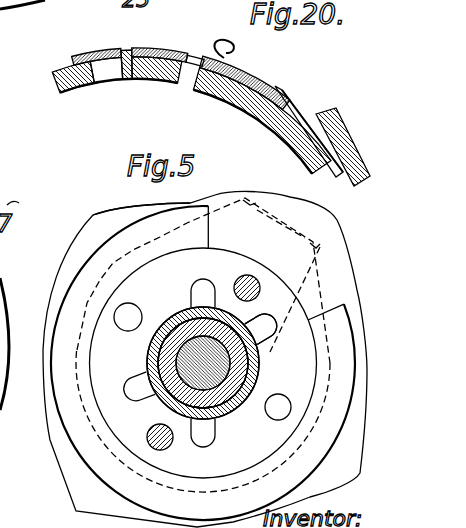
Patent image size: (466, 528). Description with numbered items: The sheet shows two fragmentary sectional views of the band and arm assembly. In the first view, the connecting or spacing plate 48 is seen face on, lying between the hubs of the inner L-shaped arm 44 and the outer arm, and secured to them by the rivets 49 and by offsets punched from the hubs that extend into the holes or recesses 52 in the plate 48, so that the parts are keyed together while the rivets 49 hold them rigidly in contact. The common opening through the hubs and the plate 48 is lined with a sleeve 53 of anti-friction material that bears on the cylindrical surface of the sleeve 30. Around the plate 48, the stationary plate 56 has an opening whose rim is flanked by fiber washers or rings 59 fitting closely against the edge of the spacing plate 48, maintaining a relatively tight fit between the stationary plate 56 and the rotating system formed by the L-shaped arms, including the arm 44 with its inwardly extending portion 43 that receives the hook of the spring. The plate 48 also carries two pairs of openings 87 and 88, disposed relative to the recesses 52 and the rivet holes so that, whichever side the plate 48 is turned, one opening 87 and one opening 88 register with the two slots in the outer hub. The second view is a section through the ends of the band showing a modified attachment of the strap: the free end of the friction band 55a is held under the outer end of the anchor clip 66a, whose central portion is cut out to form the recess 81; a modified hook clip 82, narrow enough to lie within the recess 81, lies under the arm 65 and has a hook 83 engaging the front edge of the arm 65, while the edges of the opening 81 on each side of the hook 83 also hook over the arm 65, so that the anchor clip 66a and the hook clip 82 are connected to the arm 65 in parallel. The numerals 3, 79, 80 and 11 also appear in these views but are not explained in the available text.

In FIG. 20, the drum 3 is at (333, 121).
In FIG. 20, the friction band 55a is at (80, 91).
In FIG. 20, the slot 79 is at (108, 72).
In FIG. 20, the pin 80 is at (127, 70).
In FIG. 20, the anchor clip 66a is at (162, 50).
In FIG. 20, the recess 81 is at (198, 60).
In FIG. 20, the hook 83 is at (229, 48).
In FIG. 20, the arm 65 is at (263, 73).
In FIG. 20, the hook clip 82 is at (292, 108).
In FIG. 5, the sleeve 30 is at (118, 422).
In FIG. 5, the stationary plate 56 is at (85, 232).
In FIG. 5, the fiber washers 59 is at (90, 263).
In FIG. 5, the inwardly extending portion 43 is at (267, 203).
In FIG. 5, the openings 87 is at (267, 320).
In FIG. 5, the inner L-shaped arm 44 is at (268, 324).
In FIG. 5, the openings 88 is at (137, 400).
In FIG. 5, the connecting plate 48 is at (163, 405).
In FIG. 5, the sleeve of anti-friction material 53 is at (173, 322).
In FIG. 5, the shaft 11 is at (182, 362).
In FIG. 5, the rivets 49 is at (236, 294).
In FIG. 5, the holes or recesses 52 is at (123, 322).